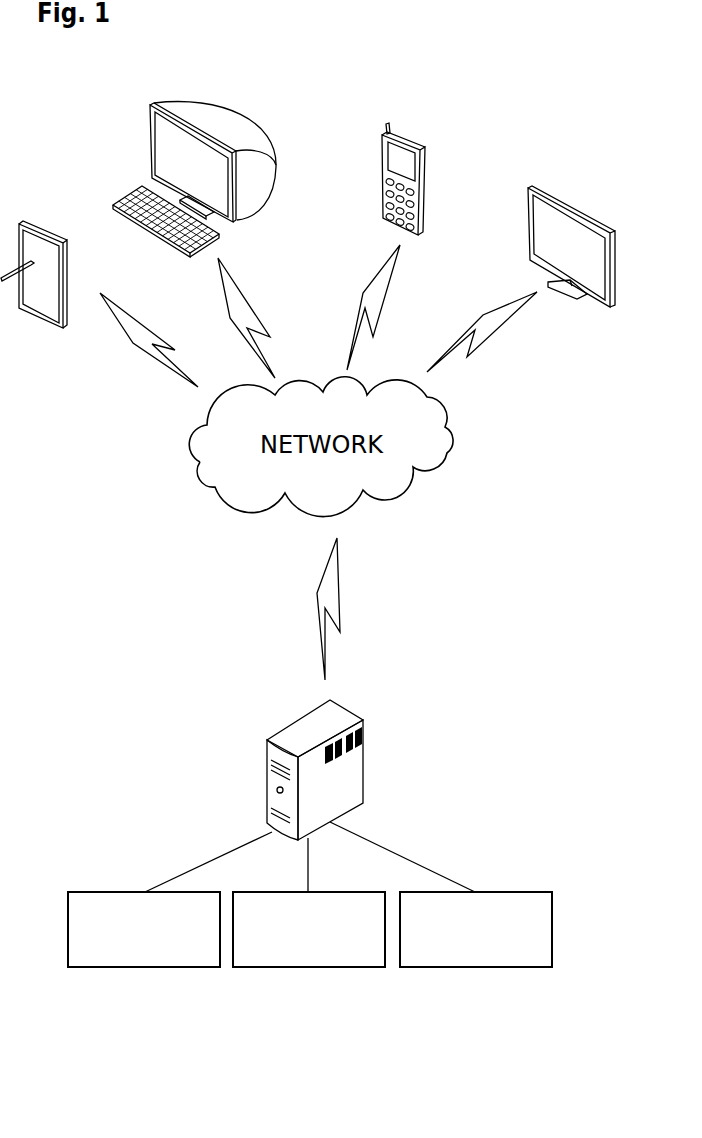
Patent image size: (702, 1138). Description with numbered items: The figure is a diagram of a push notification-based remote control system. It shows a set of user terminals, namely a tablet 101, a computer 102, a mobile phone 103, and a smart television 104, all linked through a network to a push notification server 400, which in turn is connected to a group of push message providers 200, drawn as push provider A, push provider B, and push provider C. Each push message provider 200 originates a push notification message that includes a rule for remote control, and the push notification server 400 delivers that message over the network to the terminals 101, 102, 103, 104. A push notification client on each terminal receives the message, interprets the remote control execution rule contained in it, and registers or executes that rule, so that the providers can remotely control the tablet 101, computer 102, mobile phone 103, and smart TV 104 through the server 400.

The tablet 101 is at (48, 228).
The computer 102 is at (218, 105).
The mobile phone 103 is at (412, 140).
The smart television 104 is at (590, 218).
The push notification server 400 is at (362, 757).
The push message providers 200 is at (83, 892).